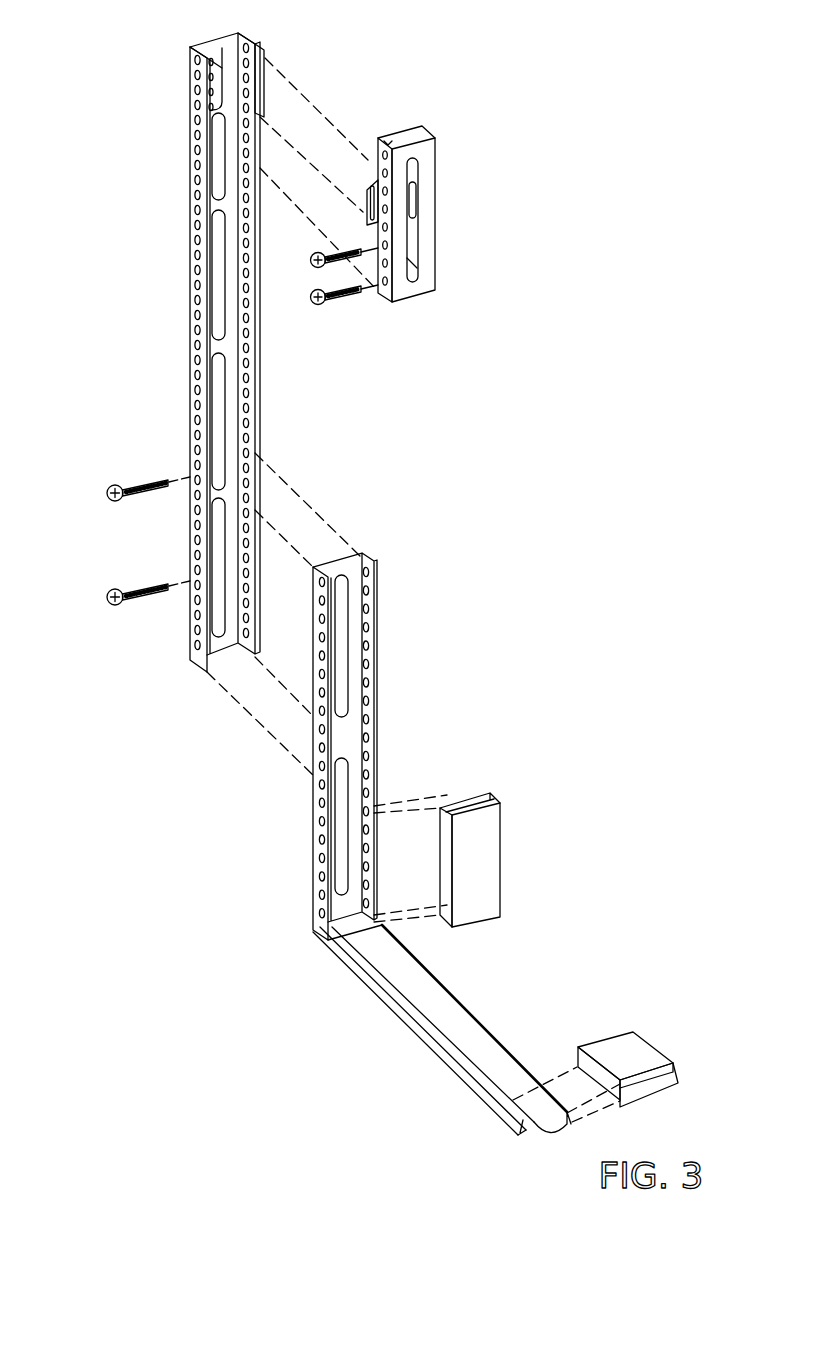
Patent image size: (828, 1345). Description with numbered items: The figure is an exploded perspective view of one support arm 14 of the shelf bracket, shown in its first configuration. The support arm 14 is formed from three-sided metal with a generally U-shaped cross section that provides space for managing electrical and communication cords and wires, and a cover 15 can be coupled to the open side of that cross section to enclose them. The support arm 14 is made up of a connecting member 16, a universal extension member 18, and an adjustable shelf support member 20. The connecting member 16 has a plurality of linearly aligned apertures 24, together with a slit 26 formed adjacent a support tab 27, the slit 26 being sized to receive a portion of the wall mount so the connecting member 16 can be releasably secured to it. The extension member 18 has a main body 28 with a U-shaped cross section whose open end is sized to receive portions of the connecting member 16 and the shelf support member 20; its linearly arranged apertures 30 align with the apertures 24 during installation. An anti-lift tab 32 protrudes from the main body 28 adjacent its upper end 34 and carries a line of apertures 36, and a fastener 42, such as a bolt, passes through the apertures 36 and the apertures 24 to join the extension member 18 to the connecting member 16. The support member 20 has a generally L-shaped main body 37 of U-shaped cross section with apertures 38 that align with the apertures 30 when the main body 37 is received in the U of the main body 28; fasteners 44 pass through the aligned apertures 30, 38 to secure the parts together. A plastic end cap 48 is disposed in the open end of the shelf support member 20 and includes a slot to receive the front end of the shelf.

The support arm 14 is at (126, 98).
The cover 15 is at (494, 836).
The connecting member 16 is at (440, 236).
The universal extension member 18 is at (188, 370).
The adjustable shelf support member 20 is at (378, 682).
The apertures 24 is at (366, 172).
The slit 26 is at (410, 147).
The support tab 27 is at (364, 210).
The main body 28 is at (192, 440).
The apertures 30 is at (197, 253).
The anti-lift tab 32 is at (206, 45).
The upper end 34 is at (185, 60).
The apertures 36 is at (252, 56).
The main body 37 is at (400, 1016).
The apertures 38 is at (316, 893).
The fastener 42 is at (311, 268).
The fasteners 44 is at (108, 488).
The end cap 48 is at (605, 1046).